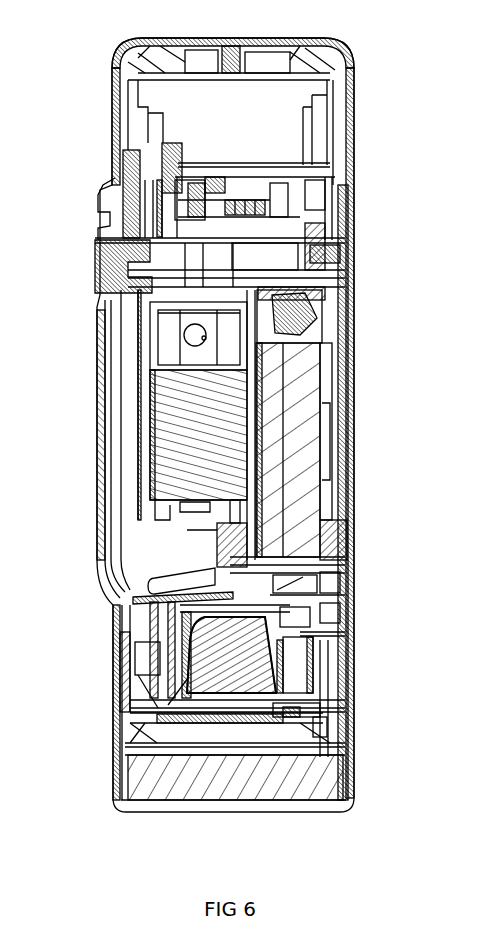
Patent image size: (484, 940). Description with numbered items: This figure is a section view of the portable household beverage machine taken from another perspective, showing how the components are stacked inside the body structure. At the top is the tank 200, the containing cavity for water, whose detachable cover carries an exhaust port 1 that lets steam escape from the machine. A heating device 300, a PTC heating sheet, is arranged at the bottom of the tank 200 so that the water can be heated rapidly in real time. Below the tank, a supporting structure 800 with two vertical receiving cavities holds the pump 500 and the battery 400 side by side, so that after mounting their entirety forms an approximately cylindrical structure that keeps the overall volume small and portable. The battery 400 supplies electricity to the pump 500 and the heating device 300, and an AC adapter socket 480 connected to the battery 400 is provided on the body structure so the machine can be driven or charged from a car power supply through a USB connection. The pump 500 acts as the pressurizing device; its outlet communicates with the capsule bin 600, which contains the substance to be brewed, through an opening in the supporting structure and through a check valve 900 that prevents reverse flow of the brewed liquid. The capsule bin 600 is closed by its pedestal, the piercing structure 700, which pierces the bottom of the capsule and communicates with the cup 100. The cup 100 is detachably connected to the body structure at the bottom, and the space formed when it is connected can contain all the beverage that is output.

The exhaust port 1 is at (170, 48).
The cup 100 is at (118, 775).
The tank 200 is at (260, 118).
The heating device 300 is at (285, 180).
The battery 400 is at (341, 392).
The AC adapter socket 480 is at (340, 256).
The pump 500 is at (160, 412).
The capsule bin 600 is at (335, 642).
The piercing structure 700 is at (277, 700).
The supporting structure 800 is at (250, 452).
The check valve 900 is at (210, 570).